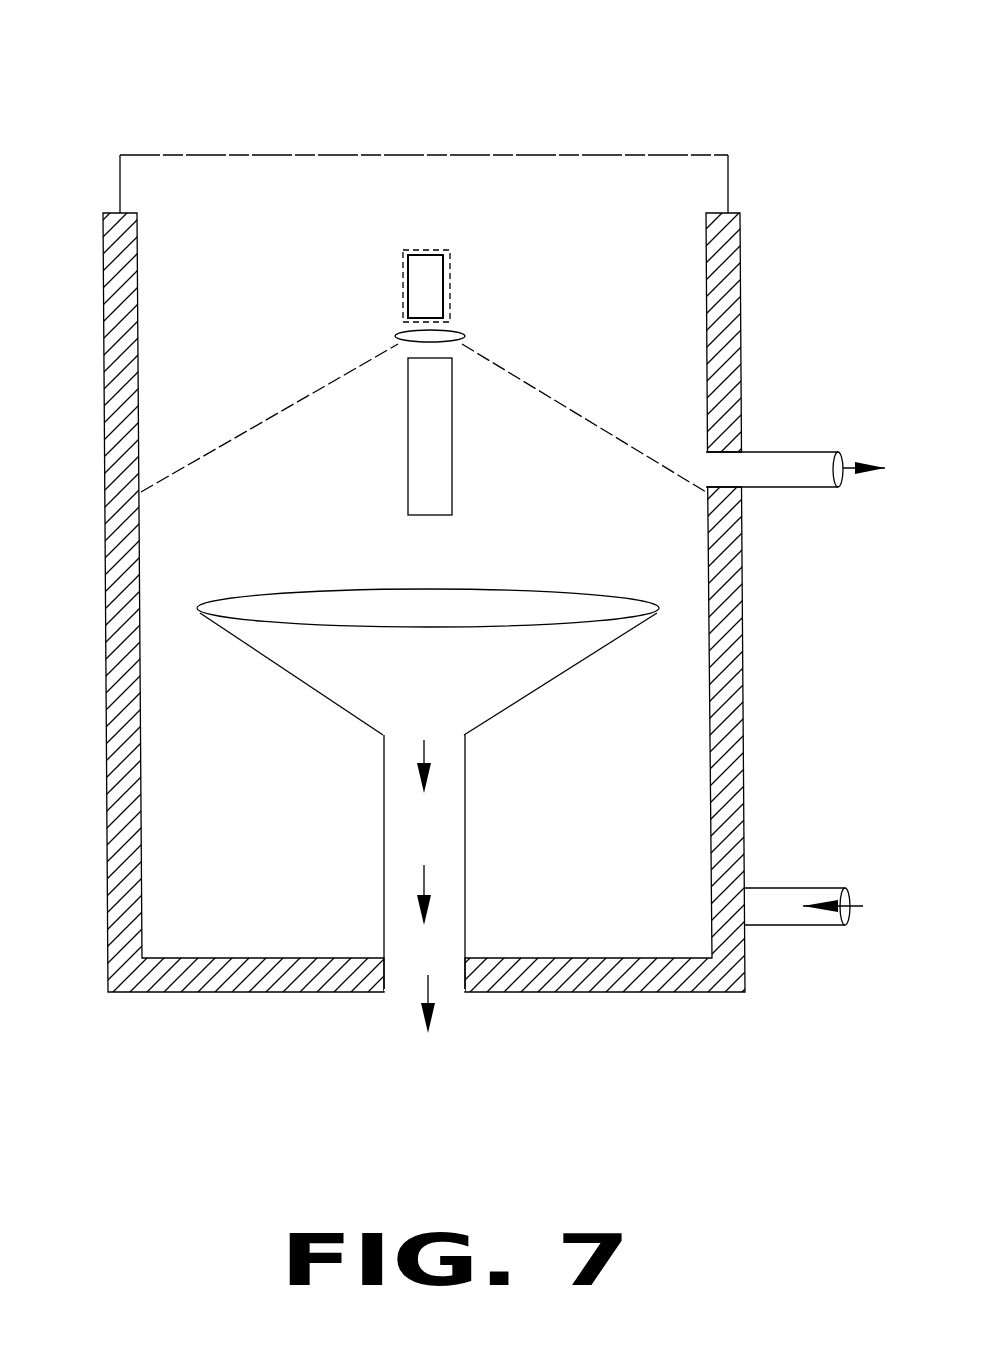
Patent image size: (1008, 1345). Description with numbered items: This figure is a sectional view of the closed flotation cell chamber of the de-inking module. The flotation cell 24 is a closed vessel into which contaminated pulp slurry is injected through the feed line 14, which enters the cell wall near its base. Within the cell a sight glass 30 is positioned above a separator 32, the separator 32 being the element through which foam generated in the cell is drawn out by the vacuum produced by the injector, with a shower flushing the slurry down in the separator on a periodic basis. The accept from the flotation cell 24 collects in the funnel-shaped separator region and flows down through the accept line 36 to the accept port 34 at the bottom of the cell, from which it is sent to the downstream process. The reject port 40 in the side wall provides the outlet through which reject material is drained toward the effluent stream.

The flotation cell 24 is at (122, 140).
The sight glass 30 is at (433, 412).
The separator 32 is at (216, 447).
The accept line 36 is at (401, 866).
The accept port 34 is at (413, 991).
The reject port 40 is at (762, 472).
The feed line 14 is at (772, 910).